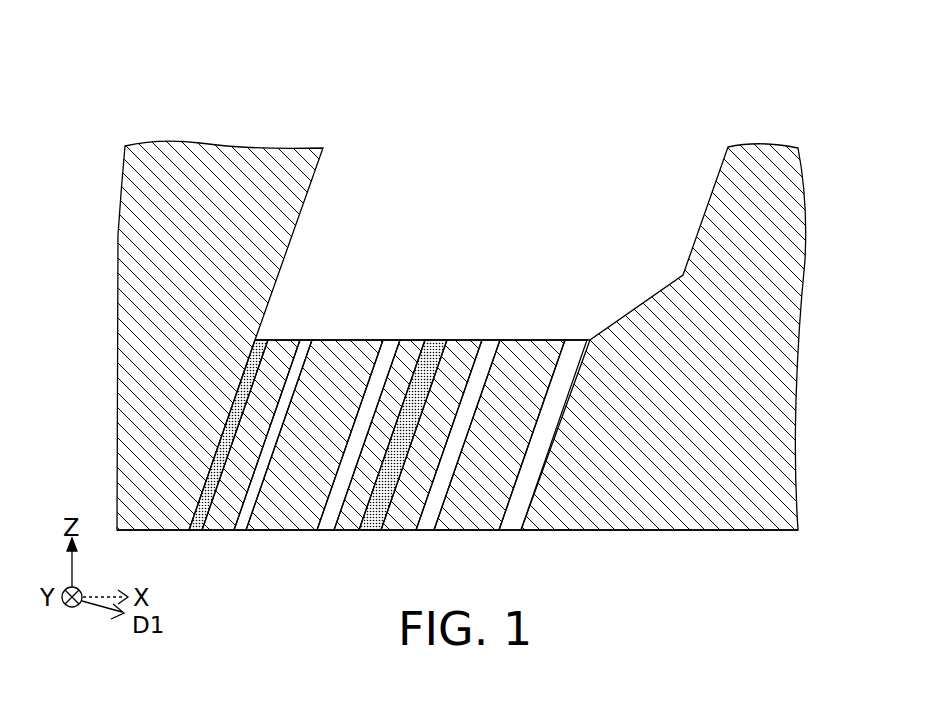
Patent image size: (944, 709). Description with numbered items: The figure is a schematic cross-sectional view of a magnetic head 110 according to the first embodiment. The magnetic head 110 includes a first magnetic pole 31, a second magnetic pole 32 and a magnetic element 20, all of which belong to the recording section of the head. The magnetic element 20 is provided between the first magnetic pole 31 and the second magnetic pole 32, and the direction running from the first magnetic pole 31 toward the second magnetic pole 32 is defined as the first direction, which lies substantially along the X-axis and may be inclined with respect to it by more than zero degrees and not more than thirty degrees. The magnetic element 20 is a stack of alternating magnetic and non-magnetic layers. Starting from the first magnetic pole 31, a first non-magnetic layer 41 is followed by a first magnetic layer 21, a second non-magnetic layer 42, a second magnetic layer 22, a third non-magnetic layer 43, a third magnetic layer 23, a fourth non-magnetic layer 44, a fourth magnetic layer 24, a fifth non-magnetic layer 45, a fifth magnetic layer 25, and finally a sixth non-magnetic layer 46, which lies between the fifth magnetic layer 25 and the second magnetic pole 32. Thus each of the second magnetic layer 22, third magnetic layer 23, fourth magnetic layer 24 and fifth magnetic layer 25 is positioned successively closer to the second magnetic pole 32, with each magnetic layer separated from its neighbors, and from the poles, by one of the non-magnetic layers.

The magnetic head 110 is at (806, 94).
The magnetic element 20 is at (676, 214).
The first magnetic layer 21 is at (286, 338).
The second magnetic layer 22 is at (349, 338).
The third magnetic layer 23 is at (419, 338).
The fourth magnetic layer 24 is at (466, 338).
The fifth magnetic layer 25 is at (536, 338).
The first magnetic pole 31 is at (135, 322).
The second magnetic pole 32 is at (767, 328).
The first non-magnetic layer 41 is at (258, 338).
The second non-magnetic layer 42 is at (311, 338).
The third non-magnetic layer 43 is at (394, 338).
The fourth non-magnetic layer 44 is at (444, 338).
The fifth non-magnetic layer 45 is at (494, 338).
The sixth non-magnetic layer 46 is at (578, 338).